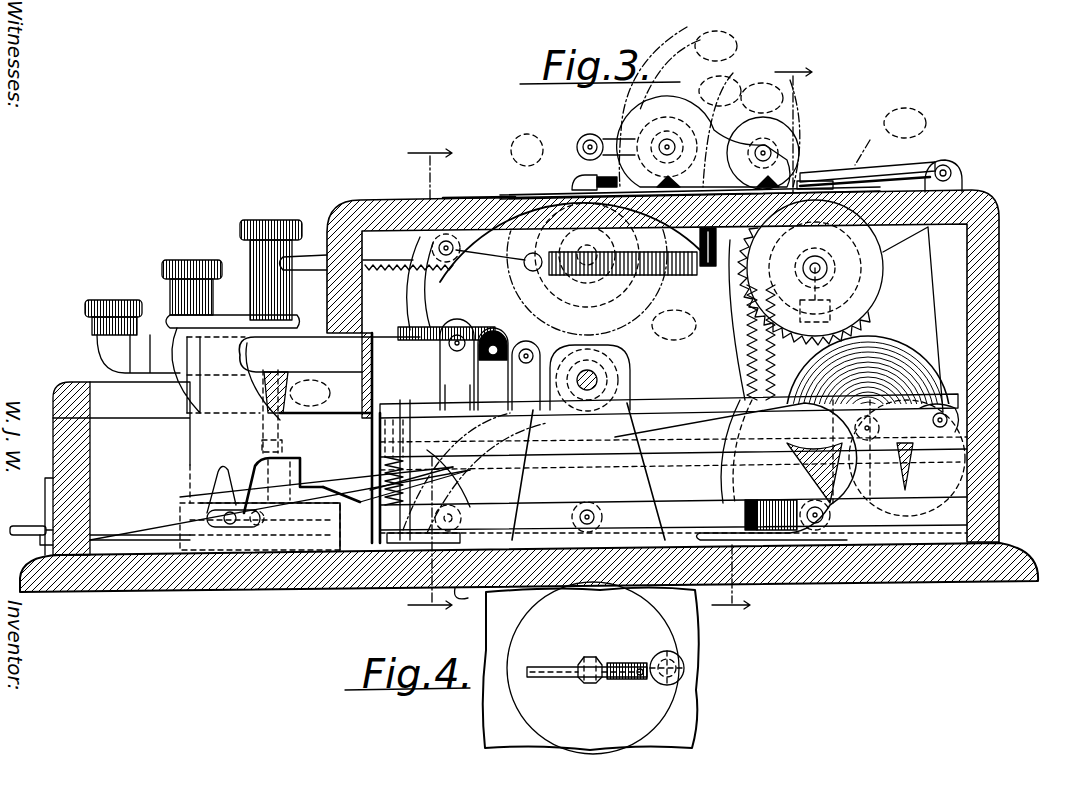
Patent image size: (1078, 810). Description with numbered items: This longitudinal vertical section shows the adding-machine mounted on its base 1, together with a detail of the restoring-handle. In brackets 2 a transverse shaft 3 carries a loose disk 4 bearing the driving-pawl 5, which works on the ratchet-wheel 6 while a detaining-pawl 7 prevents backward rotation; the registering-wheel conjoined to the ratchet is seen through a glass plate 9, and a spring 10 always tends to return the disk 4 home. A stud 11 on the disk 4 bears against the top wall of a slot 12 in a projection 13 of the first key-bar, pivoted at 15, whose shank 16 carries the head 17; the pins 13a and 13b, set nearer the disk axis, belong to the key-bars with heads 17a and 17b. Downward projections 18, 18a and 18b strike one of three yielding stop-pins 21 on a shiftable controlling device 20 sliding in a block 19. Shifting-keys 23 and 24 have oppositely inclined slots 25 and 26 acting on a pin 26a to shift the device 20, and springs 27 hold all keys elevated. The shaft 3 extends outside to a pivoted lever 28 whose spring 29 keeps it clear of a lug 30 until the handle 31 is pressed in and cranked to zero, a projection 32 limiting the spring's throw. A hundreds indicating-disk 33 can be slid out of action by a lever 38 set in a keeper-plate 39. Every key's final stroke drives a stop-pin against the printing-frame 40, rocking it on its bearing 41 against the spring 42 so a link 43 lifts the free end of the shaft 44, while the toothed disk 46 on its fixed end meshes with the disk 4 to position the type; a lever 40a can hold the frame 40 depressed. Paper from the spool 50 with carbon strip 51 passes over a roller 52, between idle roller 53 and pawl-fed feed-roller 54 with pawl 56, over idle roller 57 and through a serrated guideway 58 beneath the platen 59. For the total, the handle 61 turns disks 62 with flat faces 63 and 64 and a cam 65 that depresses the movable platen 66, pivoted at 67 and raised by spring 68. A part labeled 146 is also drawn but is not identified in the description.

In FIG. 3, the base 1 is at (157, 576).
In FIG. 3, the brackets 2 is at (660, 471).
In FIG. 3, the transverse shaft 3 is at (600, 378).
In FIG. 3, the disk 4 is at (673, 406).
In FIG. 3, the driving-pawl 5 is at (415, 268).
In FIG. 3, the ratchet-wheel 6 is at (475, 379).
In FIG. 3, the detaining-pawl 7 is at (633, 342).
In FIG. 3, the glass plate 9 is at (563, 193).
In FIG. 3, the spring 10 is at (645, 276).
In FIG. 3, the stud 11 is at (465, 322).
In FIG. 3, the slot 12 is at (453, 393).
In FIG. 3, the projection 13 is at (483, 338).
In FIG. 3, the pin 13a is at (528, 345).
In FIG. 3, the pin 13b is at (546, 355).
In FIG. 3, the pivot shaft 15 is at (950, 405).
In FIG. 3, the shank 16 is at (290, 320).
In FIG. 3, the head 17 is at (258, 222).
In FIG. 3, the head 17a is at (190, 260).
In FIG. 3, the head 17b is at (114, 300).
In FIG. 3, the projection 18 is at (288, 415).
In FIG. 3, the projection 18a is at (297, 392).
In FIG. 3, the projection 18b is at (300, 378).
In FIG. 3, the block 19 is at (310, 537).
In FIG. 3, the shiftable controlling device 20 is at (210, 500).
In FIG. 3, the stop-pins 21 is at (314, 481).
In FIG. 3, the shifting-key 23 is at (190, 440).
In FIG. 3, the shifting-key 24 is at (216, 370).
In FIG. 3, the inclined slot 25 is at (225, 468).
In FIG. 3, the inclined slot 26 is at (210, 490).
In FIG. 3, the pin 26a is at (230, 528).
In FIG. 3, the springs 27 is at (800, 472).
In FIG. 4, the pivoted lever 28 is at (542, 670).
In FIG. 4, the spring 29 is at (612, 665).
In FIG. 4, the lug 30 is at (665, 653).
In FIG. 4, the handle 31 is at (684, 667).
In FIG. 4, the projection 32 is at (527, 675).
In FIG. 3, the indicating-disk 33 is at (615, 271).
In FIG. 3, the lever 38 is at (372, 263).
In FIG. 3, the keeper-plate 39 is at (325, 240).
In FIG. 3, the printing-frame 40 is at (417, 513).
In FIG. 3, the lever 40a is at (42, 545).
In FIG. 3, the pivotal bearing 41 is at (600, 520).
In FIG. 3, the spring 42 is at (436, 470).
In FIG. 3, the link 43 is at (875, 334).
In FIG. 3, the shaft 44 is at (830, 268).
In FIG. 3, the disk 46 is at (810, 290).
In FIG. 3, the spool 50 is at (907, 373).
In FIG. 3, the carbon strip 51 is at (943, 370).
In FIG. 3, the roller 52 is at (968, 248).
In FIG. 3, the idle roller 53 is at (770, 138).
In FIG. 3, the feed-roller 54 is at (890, 136).
In FIG. 3, the pawl 56 is at (739, 320).
In FIG. 3, the idle roller 57 is at (763, 134).
In FIG. 3, the serrated guideway 58 is at (513, 198).
In FIG. 3, the platen 59 is at (815, 183).
In FIG. 3, the handle 61 is at (588, 134).
In FIG. 3, the disks 62 is at (672, 105).
In FIG. 3, the flat face 63 is at (720, 91).
In FIG. 3, the flat face 64 is at (603, 140).
In FIG. 3, the cam projection 65 is at (688, 70).
In FIG. 3, the movable platen 66 is at (905, 172).
In FIG. 3, the pivot 67 is at (952, 172).
In FIG. 3, the spring 68 is at (905, 170).
In FIG. 3, the bracket 146 is at (365, 351).